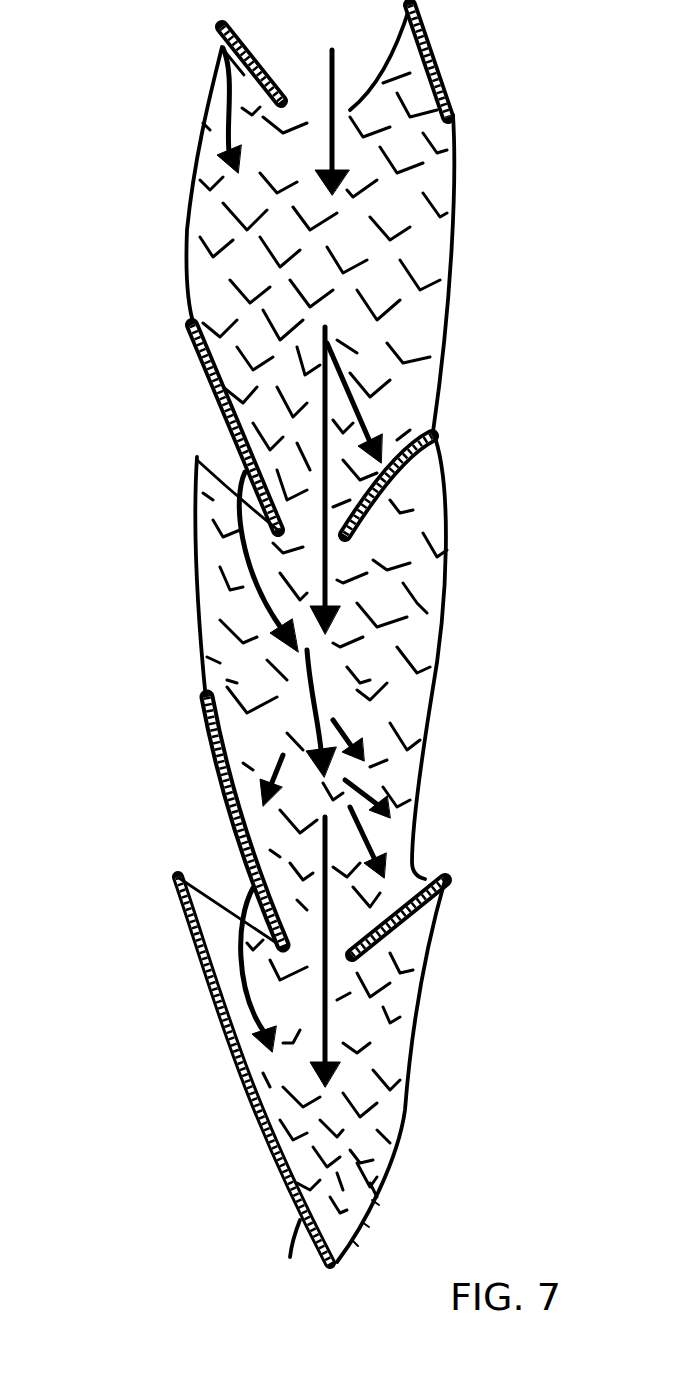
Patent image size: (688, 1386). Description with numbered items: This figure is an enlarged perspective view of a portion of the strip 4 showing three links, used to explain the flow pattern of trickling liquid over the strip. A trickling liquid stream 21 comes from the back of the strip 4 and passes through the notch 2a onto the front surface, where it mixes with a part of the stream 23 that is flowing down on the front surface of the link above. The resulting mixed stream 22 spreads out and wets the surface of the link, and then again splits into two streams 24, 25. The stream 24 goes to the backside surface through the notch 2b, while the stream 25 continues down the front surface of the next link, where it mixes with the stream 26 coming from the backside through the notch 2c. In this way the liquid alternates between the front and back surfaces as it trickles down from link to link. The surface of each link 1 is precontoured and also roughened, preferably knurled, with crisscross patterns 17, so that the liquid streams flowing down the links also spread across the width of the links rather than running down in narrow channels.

The link 1 is at (454, 252).
The crisscross patterns 17 is at (377, 300).
The stream 23 is at (327, 352).
The notch 2a is at (216, 467).
The notch 2b is at (424, 860).
The notch 2c is at (217, 877).
The trickling liquid stream 21 is at (260, 603).
The mixed stream 22 is at (313, 707).
The stream 24 is at (370, 841).
The stream 25 is at (327, 1037).
The stream 26 is at (240, 980).
The strip 4 is at (250, 1172).